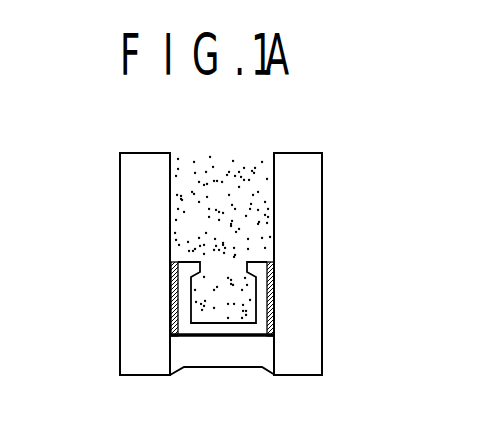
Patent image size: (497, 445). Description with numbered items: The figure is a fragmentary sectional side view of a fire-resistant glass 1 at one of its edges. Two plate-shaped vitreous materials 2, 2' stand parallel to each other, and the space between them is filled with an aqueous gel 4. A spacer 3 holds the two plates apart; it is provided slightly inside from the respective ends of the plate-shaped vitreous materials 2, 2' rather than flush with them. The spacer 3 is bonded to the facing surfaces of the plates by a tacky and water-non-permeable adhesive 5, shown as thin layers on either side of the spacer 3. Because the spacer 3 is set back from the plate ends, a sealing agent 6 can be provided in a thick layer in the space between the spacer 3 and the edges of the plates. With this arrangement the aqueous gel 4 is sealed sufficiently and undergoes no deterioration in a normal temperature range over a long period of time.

The fire-resistant glass 1 is at (322, 143).
The plate-shaped vitreous material 2' is at (104, 264).
The plate-shaped vitreous material 2 is at (329, 264).
The spacer 3 is at (263, 312).
The aqueous gel 4 is at (200, 217).
The tacky and water-non-permeable adhesive 5 is at (175, 283).
The sealing agent 6 is at (245, 353).